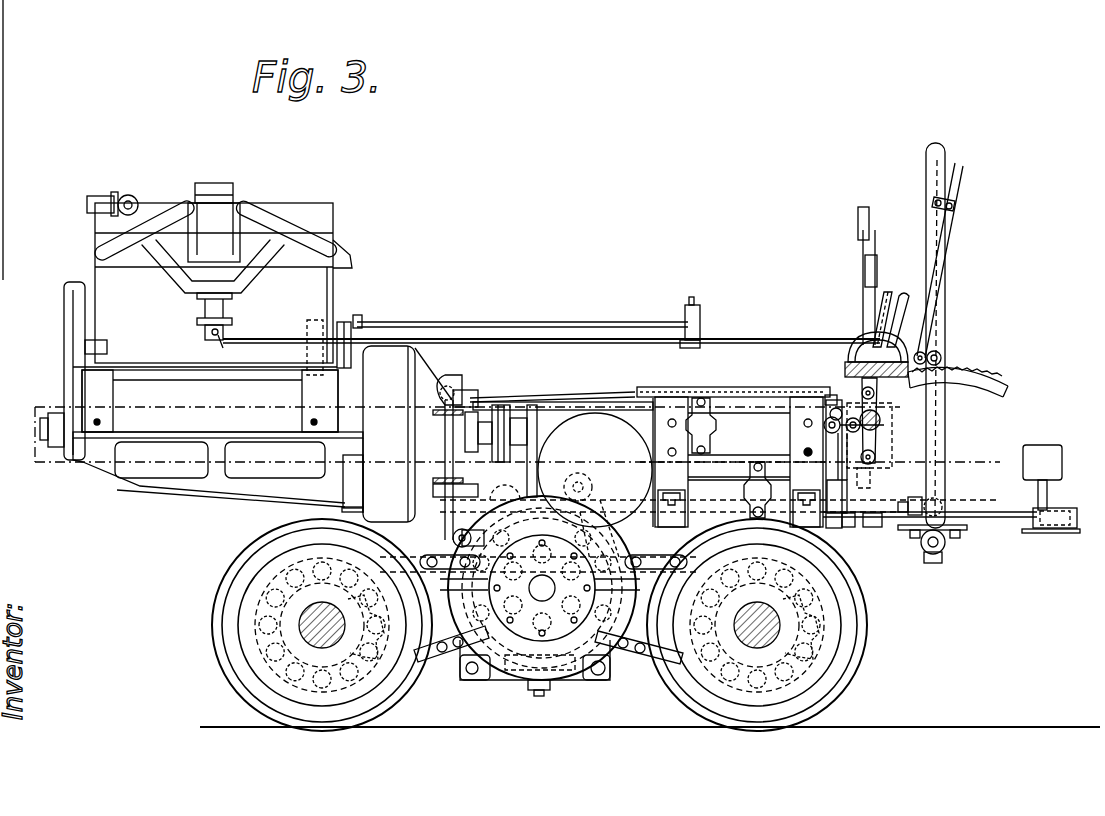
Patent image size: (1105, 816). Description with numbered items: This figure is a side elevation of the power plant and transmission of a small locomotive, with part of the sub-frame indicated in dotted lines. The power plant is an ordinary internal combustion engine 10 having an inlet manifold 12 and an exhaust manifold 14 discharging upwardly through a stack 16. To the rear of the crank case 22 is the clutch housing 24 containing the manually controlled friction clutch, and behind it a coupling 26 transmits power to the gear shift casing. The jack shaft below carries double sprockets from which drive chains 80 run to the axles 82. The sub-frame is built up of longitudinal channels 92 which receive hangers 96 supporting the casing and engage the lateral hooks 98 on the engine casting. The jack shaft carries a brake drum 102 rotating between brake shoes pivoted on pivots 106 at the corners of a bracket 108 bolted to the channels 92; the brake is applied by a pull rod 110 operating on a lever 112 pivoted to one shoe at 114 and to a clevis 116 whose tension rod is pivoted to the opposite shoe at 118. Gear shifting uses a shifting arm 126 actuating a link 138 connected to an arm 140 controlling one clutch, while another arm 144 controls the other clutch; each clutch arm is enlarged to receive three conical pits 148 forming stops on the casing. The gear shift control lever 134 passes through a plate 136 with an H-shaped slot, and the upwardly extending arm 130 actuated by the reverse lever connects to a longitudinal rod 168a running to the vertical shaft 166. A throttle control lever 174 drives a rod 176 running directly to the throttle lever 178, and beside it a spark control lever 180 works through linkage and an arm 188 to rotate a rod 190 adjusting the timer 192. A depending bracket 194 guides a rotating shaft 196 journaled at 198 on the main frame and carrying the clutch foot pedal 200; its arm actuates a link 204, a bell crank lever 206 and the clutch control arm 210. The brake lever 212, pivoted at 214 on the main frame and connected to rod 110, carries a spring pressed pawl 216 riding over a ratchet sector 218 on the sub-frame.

The internal combustion engine 10 is at (322, 300).
The inlet manifold 12 is at (255, 283).
The exhaust manifold 14 is at (303, 241).
The stack 16 is at (234, 186).
The crank case 22 is at (168, 462).
The clutch housing 24 is at (380, 353).
The coupling 26 is at (503, 404).
The drive chains 80 is at (444, 660).
The axles 82 is at (539, 616).
The longitudinal channels 92 is at (274, 455).
The hangers 96 is at (798, 400).
The lateral hooks 98 is at (92, 400).
The brake drum 102 is at (538, 696).
The pivots 106 is at (595, 486).
The bracket 108 is at (476, 481).
The pull rod 110 is at (868, 514).
The lever 112 is at (452, 537).
The pivot 114 is at (463, 680).
The clevis 116 is at (492, 672).
The pivot 118 is at (594, 680).
The shifting arm 126 is at (880, 424).
The shifting arm 130 is at (880, 398).
The gear shift control lever 134 is at (872, 268).
The plate 136 is at (875, 456).
The link 138 is at (866, 215).
The arm 140 is at (746, 494).
The arm 144 is at (708, 418).
The conical pits 148 is at (735, 450).
The vertical shaft 166 is at (444, 445).
The longitudinal rod 168a is at (600, 392).
The throttle control lever 174 is at (895, 303).
The rod 176 is at (280, 347).
The throttle lever 178 is at (222, 336).
The spark control lever 180 is at (902, 296).
The arm 188 is at (700, 330).
The rod 190 is at (566, 318).
The timer 192 is at (347, 330).
The depending bracket 194 is at (870, 512).
The rotating shaft 196 is at (980, 512).
The journal 198 is at (1058, 512).
The clutch foot pedal 200 is at (1045, 455).
The link 204 is at (852, 528).
The bell crank lever 206 is at (838, 408).
The clutch control arm 210 is at (440, 385).
The brake lever 212 is at (940, 320).
The pivot 214 is at (922, 548).
The spring pressed pawl 216 is at (942, 355).
The ratchet sector 218 is at (985, 378).